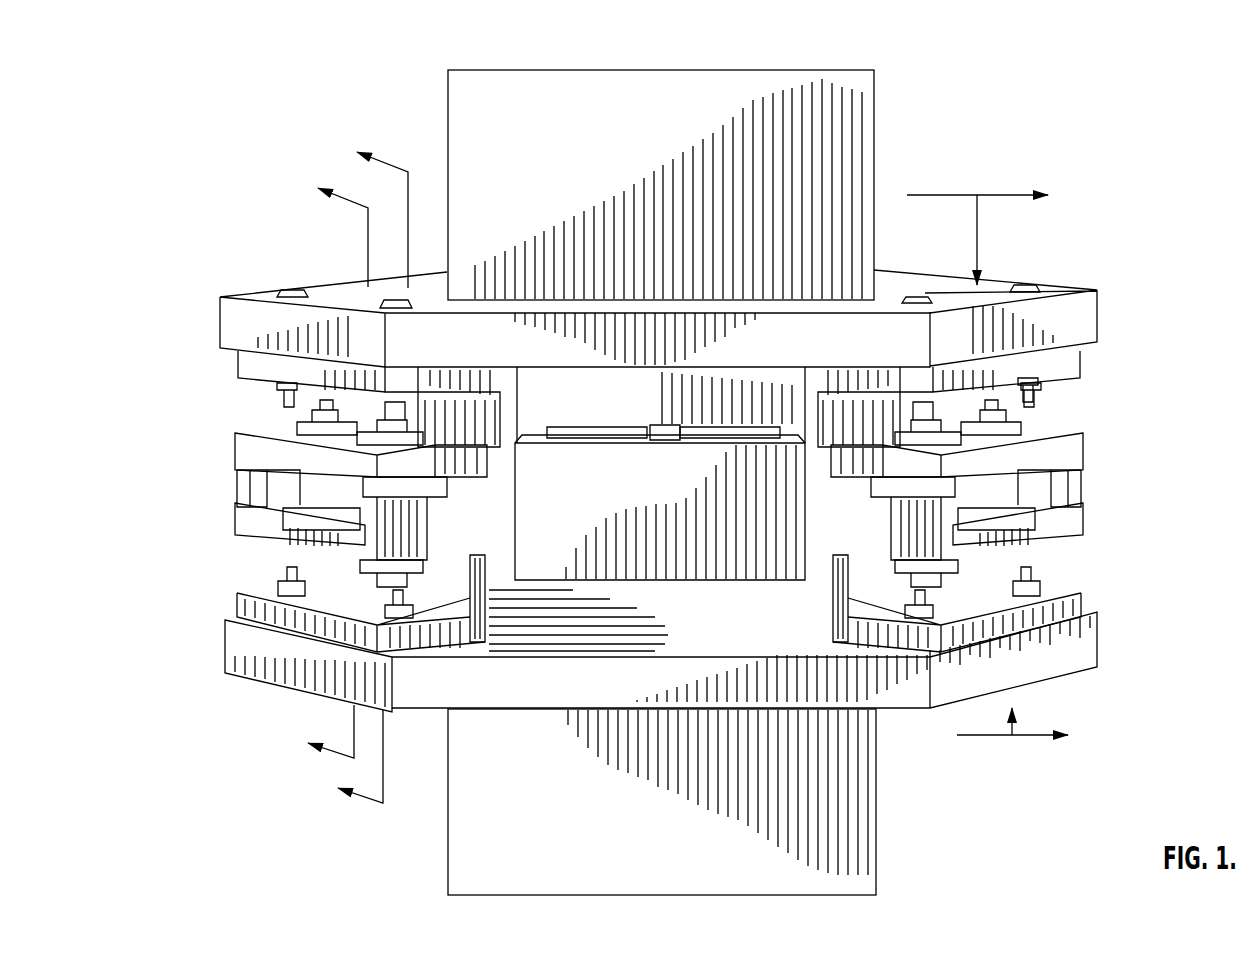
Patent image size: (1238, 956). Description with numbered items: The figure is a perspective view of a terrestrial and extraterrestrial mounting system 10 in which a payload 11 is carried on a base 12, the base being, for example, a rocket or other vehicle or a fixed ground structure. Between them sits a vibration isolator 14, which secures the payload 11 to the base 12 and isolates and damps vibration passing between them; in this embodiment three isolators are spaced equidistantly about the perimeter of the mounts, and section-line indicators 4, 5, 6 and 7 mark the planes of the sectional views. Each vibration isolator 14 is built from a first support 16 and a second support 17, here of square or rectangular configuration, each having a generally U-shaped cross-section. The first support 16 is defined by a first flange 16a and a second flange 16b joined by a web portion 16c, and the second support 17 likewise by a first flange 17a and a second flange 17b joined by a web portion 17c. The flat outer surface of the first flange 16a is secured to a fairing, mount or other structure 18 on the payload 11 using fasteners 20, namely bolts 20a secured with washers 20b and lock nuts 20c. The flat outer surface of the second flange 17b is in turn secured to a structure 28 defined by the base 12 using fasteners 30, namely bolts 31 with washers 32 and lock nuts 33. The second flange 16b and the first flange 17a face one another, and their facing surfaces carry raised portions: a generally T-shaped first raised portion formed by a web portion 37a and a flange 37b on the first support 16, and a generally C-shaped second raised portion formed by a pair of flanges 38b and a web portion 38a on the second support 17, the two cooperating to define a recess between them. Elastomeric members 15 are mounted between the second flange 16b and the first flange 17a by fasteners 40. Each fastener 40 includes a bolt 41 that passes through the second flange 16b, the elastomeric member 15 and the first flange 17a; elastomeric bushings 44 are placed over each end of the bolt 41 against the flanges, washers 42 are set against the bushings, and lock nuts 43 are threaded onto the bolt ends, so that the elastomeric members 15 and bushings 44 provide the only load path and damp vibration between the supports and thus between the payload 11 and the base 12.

The mounting system 10 is at (905, 132).
The payload 11 is at (490, 93).
The base 12 is at (850, 798).
The vibration isolator 14 is at (222, 457).
The elastomeric member 15 is at (600, 433).
The first support 16 is at (548, 385).
The first flange 16a is at (238, 358).
The second flange 16b is at (237, 433).
The web portion 16c is at (485, 435).
The second support 17 is at (658, 533).
The first flange 17a is at (255, 518).
The second flange 17b is at (237, 596).
The web portion 17c is at (480, 590).
The structure 18 is at (1085, 305).
The fasteners 20 is at (285, 290).
The bolts 20a is at (290, 290).
The washers 20b is at (273, 378).
The lock nuts 20c is at (288, 400).
The structure 28 is at (1088, 655).
The fasteners 30 is at (278, 570).
The bolts 31 is at (1030, 560).
The washers 32 is at (1043, 573).
The lock nuts 33 is at (1028, 587).
The web portion 37a is at (283, 485).
The flange 37b is at (672, 425).
The web portion 38a is at (652, 425).
The flanges 38b is at (250, 483).
The fastener 40 is at (307, 413).
The bolt 41 is at (985, 403).
The washers 42 is at (427, 563).
The lock nuts 43 is at (407, 572).
The elastomeric bushings 44 is at (1015, 418).
The section line 4- 4 is at (1044, 470).
The section line 5- 5 is at (987, 468).
The section line 6- 6 is at (373, 480).
The section line 7- 7 is at (338, 476).